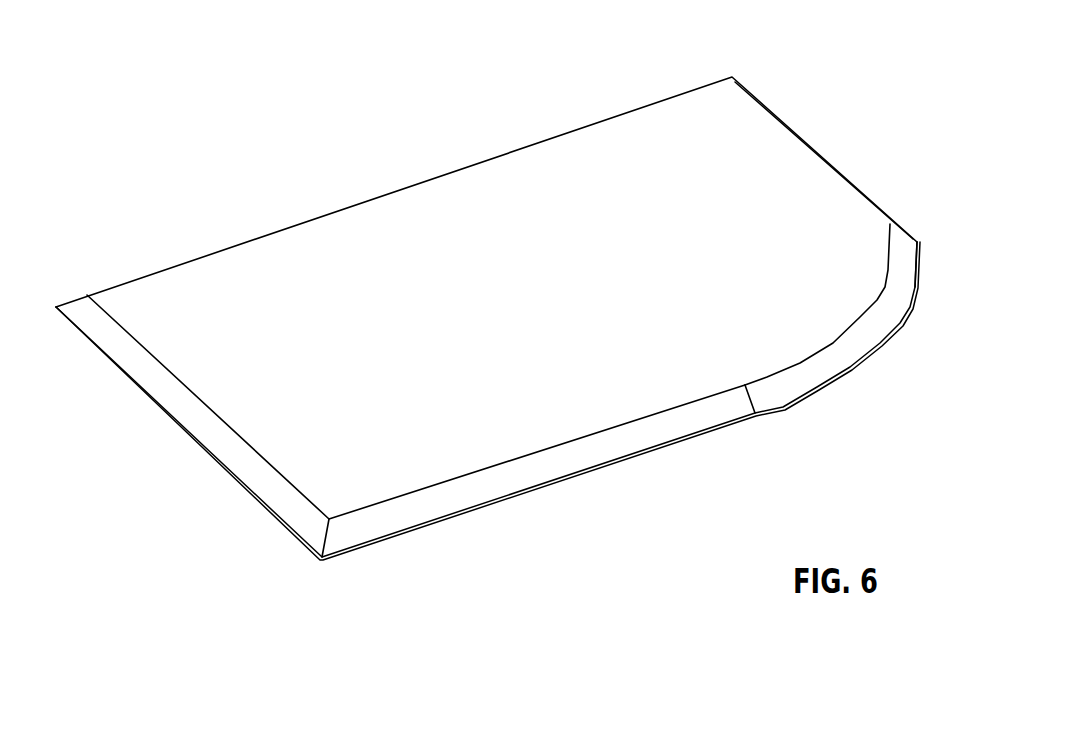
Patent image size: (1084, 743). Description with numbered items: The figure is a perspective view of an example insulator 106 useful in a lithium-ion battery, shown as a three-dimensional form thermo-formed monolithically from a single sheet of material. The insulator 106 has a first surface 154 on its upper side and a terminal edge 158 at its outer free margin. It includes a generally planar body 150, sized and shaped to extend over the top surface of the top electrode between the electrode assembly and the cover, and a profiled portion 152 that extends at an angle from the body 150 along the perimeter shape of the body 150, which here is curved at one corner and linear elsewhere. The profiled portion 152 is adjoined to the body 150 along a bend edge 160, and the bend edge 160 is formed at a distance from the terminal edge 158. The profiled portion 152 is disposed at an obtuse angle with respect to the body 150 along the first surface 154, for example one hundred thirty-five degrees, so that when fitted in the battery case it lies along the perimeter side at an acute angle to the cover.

The insulator 106 is at (141, 112).
The body 150 is at (528, 291).
The profiled portion 152 is at (198, 420).
The first surface 154 is at (323, 240).
The terminal edge 158 is at (232, 478).
The bend edge 160 is at (170, 373).